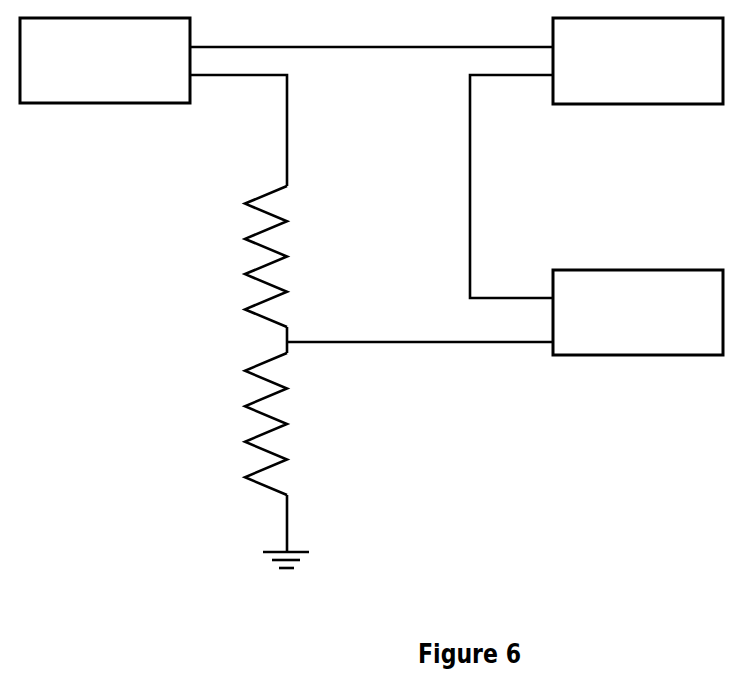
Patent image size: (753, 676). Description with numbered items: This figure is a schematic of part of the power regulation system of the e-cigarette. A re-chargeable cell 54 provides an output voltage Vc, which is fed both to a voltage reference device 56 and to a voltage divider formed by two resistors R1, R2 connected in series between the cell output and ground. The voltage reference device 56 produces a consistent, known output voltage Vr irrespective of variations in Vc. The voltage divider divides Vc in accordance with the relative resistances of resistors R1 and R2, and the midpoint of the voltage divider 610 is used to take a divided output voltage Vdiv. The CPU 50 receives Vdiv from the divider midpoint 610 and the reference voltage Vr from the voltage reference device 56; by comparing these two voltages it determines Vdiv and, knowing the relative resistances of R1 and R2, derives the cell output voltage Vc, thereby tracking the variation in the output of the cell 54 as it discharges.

The re-chargeable cell 54 is at (105, 60).
The voltage reference device 56 is at (638, 61).
The CPU 50 is at (638, 312).
The resistor R1 is at (212, 256).
The resistor R2 is at (208, 424).
The midpoint of the voltage divider 610 is at (420, 396).